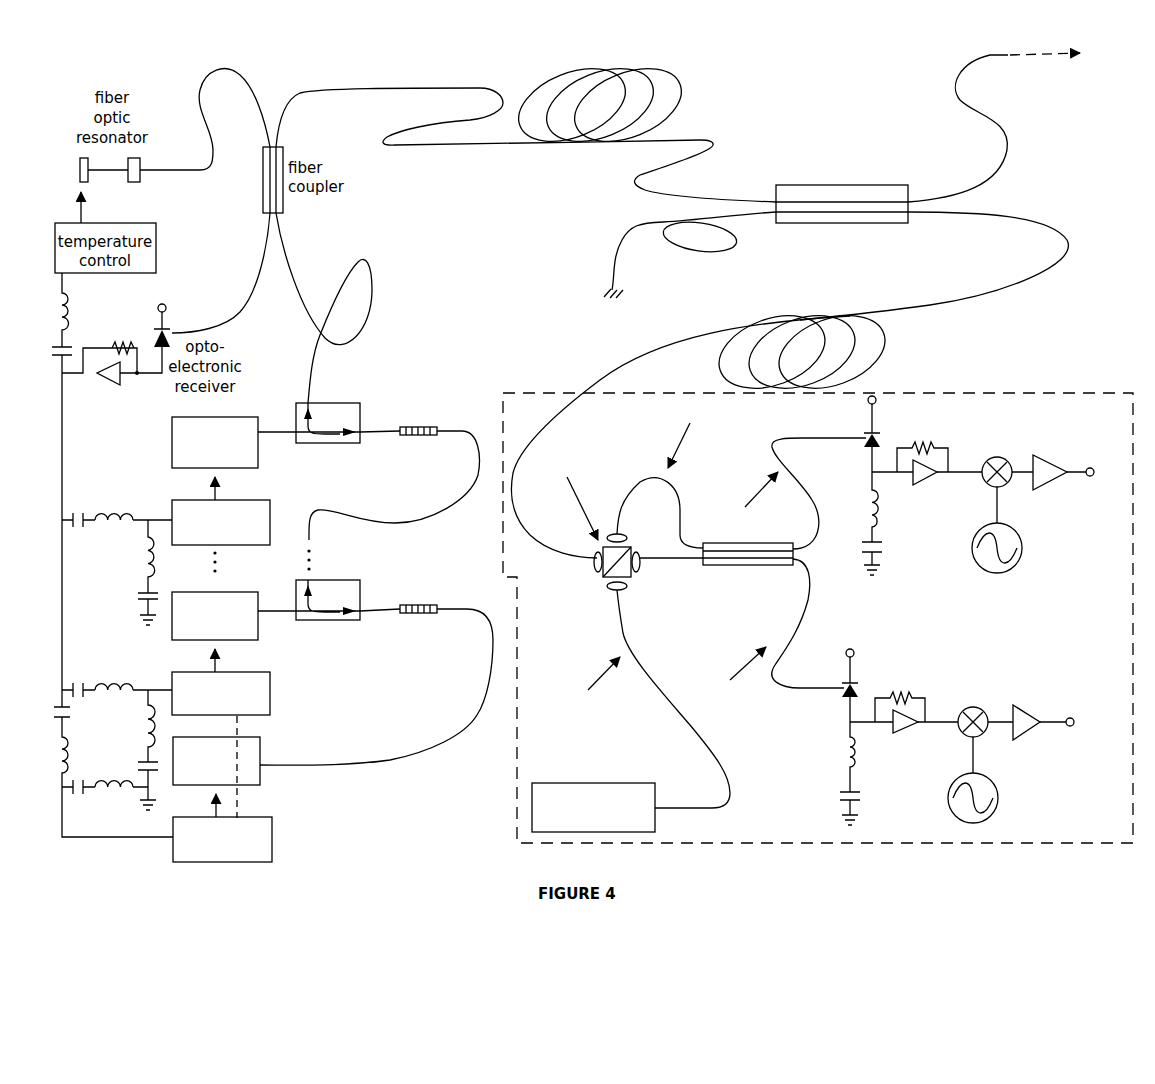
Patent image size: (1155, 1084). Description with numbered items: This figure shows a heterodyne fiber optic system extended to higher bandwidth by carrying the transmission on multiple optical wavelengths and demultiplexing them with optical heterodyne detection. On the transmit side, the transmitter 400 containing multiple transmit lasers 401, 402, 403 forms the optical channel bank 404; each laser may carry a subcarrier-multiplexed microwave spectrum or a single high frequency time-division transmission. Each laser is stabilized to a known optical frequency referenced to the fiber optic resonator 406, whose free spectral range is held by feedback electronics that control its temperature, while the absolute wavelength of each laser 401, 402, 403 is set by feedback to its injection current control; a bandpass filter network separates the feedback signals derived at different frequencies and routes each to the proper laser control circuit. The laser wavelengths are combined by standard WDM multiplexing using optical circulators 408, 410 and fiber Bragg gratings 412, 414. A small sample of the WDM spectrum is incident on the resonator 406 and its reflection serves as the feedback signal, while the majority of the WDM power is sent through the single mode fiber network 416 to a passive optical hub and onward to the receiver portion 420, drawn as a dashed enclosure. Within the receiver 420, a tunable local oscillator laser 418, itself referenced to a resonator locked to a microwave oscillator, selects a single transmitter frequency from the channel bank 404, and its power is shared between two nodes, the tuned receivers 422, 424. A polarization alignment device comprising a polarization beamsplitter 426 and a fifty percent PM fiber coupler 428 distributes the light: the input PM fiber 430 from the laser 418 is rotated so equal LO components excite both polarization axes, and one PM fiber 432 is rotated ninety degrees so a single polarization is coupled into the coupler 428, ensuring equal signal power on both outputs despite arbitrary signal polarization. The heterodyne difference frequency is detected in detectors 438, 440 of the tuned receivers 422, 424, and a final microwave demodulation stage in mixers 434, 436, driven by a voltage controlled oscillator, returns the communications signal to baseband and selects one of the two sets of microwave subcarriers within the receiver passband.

The transmitter 400 is at (452, 299).
The transmit laser #1 401 is at (172, 440).
The transmit laser #N-1 402 is at (168, 636).
The transmit laser #N 403 is at (262, 748).
The optical channel bank 404 is at (469, 367).
The fiber optic resonator 406 is at (138, 180).
The optical circulator 408 is at (342, 580).
The optical circulator 410 is at (347, 403).
The fiber Bragg grating 412 is at (421, 613).
The fiber Bragg grating 414 is at (422, 435).
The single mode fiber network 416 is at (488, 218).
The local oscillator laser 418 is at (633, 783).
The receiver node 420 is at (500, 828).
The tuned receiver 422 is at (930, 749).
The tuned receiver 424 is at (942, 497).
The polarization beamsplitter 426 is at (597, 594).
The 50% PM fiber coupler 428 is at (703, 569).
The input PM fiber 430 is at (697, 745).
The PM fiber 432 is at (680, 485).
The mixer 434 is at (976, 707).
The mixer 436 is at (1001, 457).
The detector 438 is at (836, 702).
The detector 440 is at (866, 445).